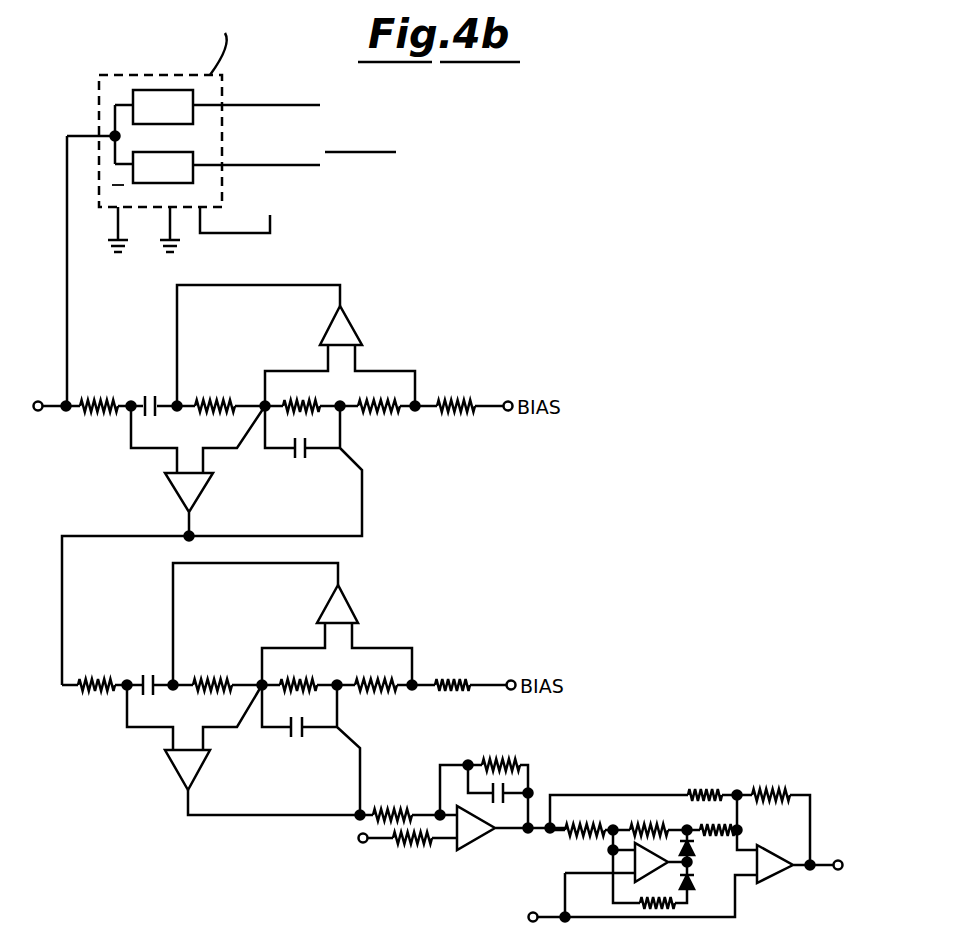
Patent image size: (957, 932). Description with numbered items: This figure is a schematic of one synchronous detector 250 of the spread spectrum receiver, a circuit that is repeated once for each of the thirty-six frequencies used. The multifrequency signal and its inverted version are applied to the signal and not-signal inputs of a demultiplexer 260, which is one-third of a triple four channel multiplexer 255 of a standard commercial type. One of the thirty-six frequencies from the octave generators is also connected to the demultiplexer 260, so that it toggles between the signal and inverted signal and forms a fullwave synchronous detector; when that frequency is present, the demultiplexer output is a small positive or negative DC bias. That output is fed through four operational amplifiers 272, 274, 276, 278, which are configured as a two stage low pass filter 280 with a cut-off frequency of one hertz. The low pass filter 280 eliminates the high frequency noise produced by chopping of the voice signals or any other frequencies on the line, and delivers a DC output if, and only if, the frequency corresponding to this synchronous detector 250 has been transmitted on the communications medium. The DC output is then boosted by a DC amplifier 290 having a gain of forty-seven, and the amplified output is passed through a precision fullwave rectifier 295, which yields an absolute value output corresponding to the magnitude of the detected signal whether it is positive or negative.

The synchronous detector 250 is at (598, 196).
The triple four channel multiplexer 255 is at (105, 75).
The demultiplexer 260 is at (263, 80).
The operational amplifier 272 is at (180, 495).
The operational amplifier 274 is at (355, 328).
The operational amplifier 276 is at (178, 777).
The operational amplifier 278 is at (350, 605).
The two stage low pass filter 280 is at (553, 594).
The DC amplifier 290 is at (553, 762).
The precision fullwave rectifier 295 is at (765, 775).